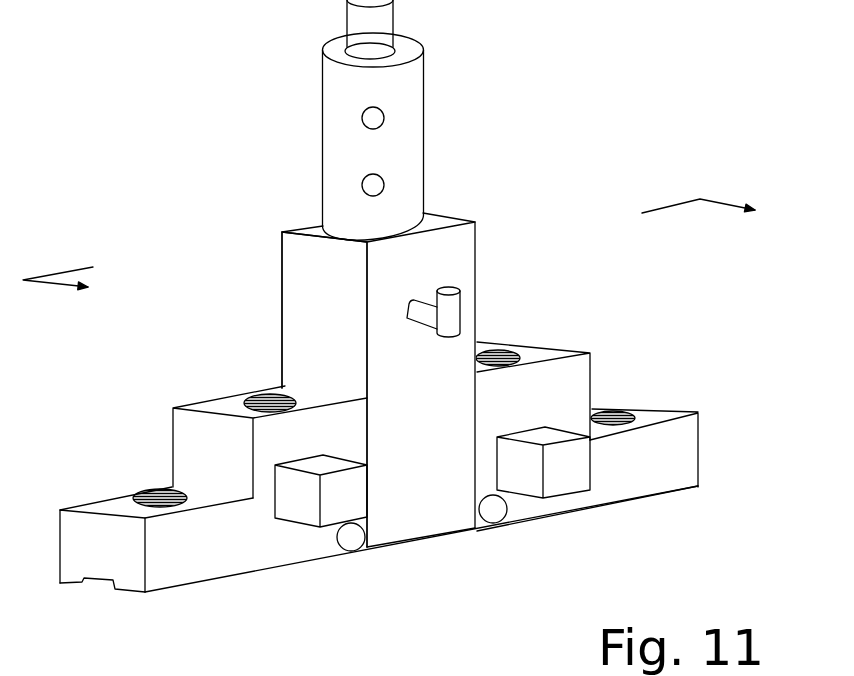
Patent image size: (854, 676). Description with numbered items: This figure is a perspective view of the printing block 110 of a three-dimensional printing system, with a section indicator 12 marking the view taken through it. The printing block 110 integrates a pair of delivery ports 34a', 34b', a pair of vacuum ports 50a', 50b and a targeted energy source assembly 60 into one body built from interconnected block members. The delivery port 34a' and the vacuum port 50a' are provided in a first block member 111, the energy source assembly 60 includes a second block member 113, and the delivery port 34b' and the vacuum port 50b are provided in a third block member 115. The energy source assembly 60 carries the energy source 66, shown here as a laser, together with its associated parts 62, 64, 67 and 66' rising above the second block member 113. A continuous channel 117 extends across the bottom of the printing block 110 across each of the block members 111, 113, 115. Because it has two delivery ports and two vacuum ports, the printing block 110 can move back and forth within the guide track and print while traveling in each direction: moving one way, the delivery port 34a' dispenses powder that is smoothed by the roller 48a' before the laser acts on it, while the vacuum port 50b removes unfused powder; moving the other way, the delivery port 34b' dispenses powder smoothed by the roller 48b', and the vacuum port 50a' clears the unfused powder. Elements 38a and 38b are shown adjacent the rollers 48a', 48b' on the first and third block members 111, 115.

The section line for FIG. 12 is at (397, 252).
The printing block 110 is at (113, 65).
The second block member 113 is at (266, 279).
The targeted energy source assembly 60 is at (472, 205).
The column block 62 is at (467, 258).
The locking pin 64 is at (457, 310).
The sleeve 67 is at (415, 137).
The energy source 66 is at (401, 29).
The lower shaft 66' is at (454, 667).
The first block member 111 is at (92, 506).
The continuous channel 117 is at (94, 588).
The vacuum port 50a' is at (149, 470).
The delivery port 34a' is at (251, 377).
The stop block 38a is at (297, 511).
The roller 48a' is at (358, 573).
The third block member 115 is at (665, 413).
The delivery port 34b' is at (534, 374).
The bore 50b is at (613, 410).
The stop block 38b is at (584, 474).
The roller 48b' is at (513, 534).